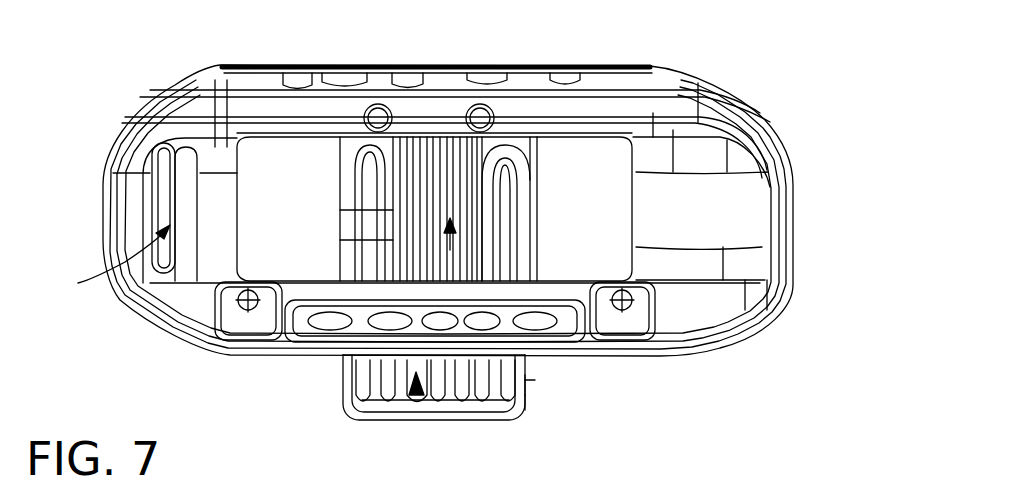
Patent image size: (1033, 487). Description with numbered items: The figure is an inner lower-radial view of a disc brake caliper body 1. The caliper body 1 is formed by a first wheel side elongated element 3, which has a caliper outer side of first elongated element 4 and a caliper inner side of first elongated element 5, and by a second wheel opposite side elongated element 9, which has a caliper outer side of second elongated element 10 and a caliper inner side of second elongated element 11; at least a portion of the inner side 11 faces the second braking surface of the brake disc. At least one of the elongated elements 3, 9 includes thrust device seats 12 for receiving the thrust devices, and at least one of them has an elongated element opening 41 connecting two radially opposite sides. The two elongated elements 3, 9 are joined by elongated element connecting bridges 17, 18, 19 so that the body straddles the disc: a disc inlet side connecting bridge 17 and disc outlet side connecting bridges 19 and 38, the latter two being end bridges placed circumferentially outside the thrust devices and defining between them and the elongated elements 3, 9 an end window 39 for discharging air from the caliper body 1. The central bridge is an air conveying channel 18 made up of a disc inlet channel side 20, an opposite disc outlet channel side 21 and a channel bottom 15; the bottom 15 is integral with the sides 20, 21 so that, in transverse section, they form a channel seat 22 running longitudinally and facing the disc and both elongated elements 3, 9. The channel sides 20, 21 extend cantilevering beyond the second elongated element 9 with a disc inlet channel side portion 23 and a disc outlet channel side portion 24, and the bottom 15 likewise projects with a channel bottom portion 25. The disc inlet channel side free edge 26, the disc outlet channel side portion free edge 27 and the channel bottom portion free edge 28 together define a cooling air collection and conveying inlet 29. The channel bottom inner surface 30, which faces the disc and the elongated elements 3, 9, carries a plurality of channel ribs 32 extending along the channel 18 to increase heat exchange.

The caliper body 1 is at (722, 73).
The first wheel side elongated element 3 is at (553, 105).
The caliper outer side of first elongated element 4 is at (290, 57).
The caliper inner side of first elongated element 5 is at (270, 150).
The second wheel opposite side elongated element 9 is at (583, 343).
The caliper outer side of second elongated element 10 is at (300, 352).
The caliper inner side of second elongated element 11 is at (312, 265).
The thrust device seat 12 is at (338, 75).
The channel bottom 15 is at (413, 228).
The vehicle forward driving direction disc inlet side elongated element connecting b 17 is at (720, 203).
The air conveying channel 18 is at (473, 215).
The vehicle forward driving direction disc outlet side elongated element connecting 19 is at (128, 207).
The disc inlet channel side 20 is at (537, 180).
The disc outlet channel side 21 is at (340, 212).
The channel seat 22 is at (449, 235).
The disc inlet channel side portion 23 is at (525, 397).
The disc outlet channel side portion 24 is at (350, 385).
The channel bottom portion 25 is at (477, 420).
The disc inlet channel side free edge 26 is at (523, 382).
The disc outlet channel side portion free edge 27 is at (350, 348).
The channel bottom portion free edge 28 is at (560, 428).
The cooling air collection and conveying inlet 29 is at (417, 410).
The channel bottom inner surface 30 is at (407, 187).
The channel ribs 32 is at (367, 240).
The second vehicle forward driving direction disc outlet side elongated element conn 38 is at (185, 272).
The end window 39 is at (102, 261).
The elongated element opening 41 is at (378, 108).